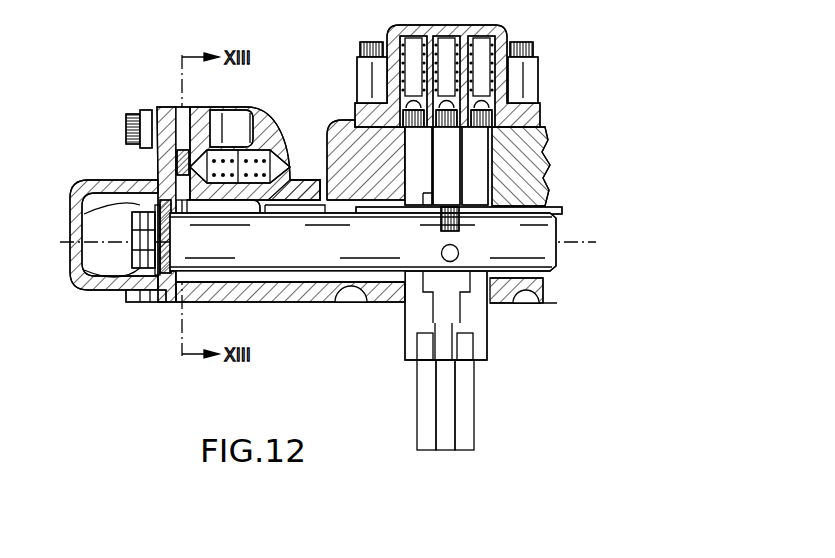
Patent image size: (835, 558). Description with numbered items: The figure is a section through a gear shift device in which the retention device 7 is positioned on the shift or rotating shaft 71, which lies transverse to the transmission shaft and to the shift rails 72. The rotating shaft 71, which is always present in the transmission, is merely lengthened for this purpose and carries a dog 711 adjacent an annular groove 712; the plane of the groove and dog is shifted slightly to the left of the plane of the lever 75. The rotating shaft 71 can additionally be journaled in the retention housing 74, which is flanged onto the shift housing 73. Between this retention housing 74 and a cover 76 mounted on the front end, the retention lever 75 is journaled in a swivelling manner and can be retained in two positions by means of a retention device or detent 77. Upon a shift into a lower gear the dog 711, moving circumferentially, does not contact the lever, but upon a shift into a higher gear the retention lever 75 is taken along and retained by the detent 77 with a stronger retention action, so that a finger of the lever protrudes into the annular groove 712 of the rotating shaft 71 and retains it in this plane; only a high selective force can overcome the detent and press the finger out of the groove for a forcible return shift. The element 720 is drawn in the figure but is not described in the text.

The retention device 7 is at (105, 158).
The rotating shaft 71 is at (352, 260).
The shift rails 72 is at (428, 434).
The shift housing 73 is at (346, 192).
The retention housing 74 is at (303, 190).
The retention lever 75 is at (158, 196).
The cover 76 is at (106, 302).
The retention device or detent 77 is at (242, 124).
The dog 711 is at (84, 214).
The annular groove 712 is at (84, 270).
The spring chamber 720 is at (250, 150).